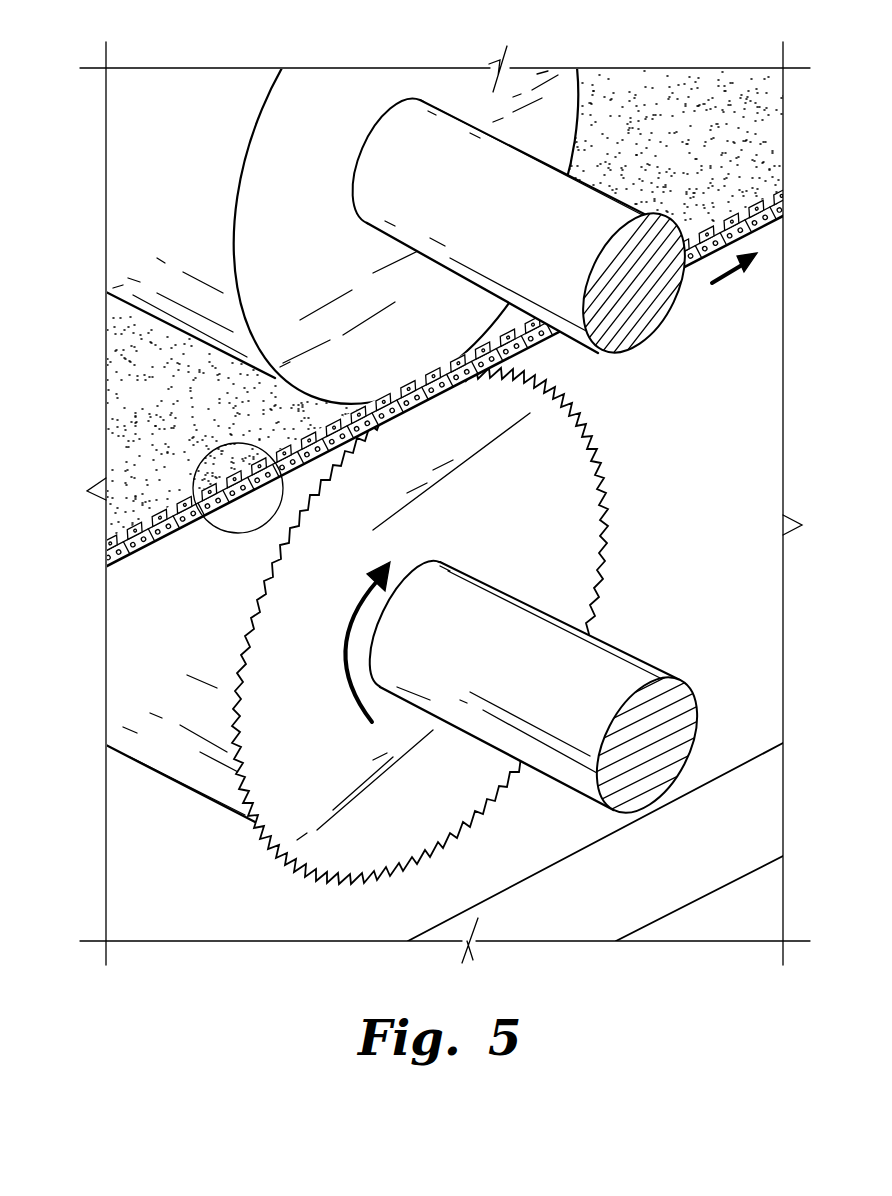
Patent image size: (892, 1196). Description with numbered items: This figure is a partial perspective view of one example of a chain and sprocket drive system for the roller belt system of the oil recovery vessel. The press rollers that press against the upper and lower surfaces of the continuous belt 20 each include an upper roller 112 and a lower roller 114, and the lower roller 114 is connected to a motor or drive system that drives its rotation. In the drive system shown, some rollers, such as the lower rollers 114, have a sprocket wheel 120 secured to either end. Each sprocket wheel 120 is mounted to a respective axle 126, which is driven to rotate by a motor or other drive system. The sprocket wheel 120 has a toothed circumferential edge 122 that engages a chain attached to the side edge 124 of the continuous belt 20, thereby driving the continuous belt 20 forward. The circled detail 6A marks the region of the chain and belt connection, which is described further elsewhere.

The continuous belt 20 is at (684, 138).
The upper roller 112 is at (333, 97).
The lower roller 114 is at (160, 778).
The sprocket wheel 120 is at (573, 542).
The saw blade teeth 122 is at (622, 446).
The side edge 124 is at (177, 553).
The axle 126 is at (685, 705).
The detail circle 6A is at (231, 533).